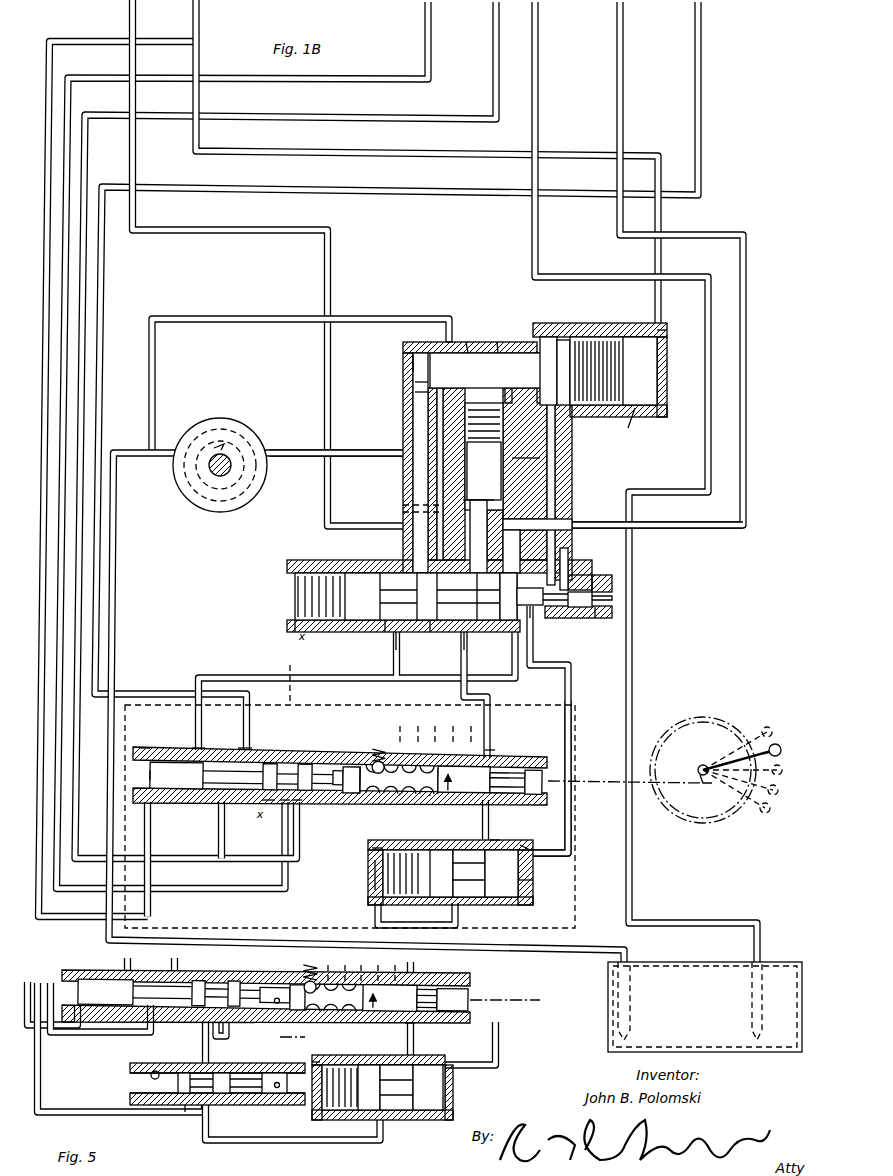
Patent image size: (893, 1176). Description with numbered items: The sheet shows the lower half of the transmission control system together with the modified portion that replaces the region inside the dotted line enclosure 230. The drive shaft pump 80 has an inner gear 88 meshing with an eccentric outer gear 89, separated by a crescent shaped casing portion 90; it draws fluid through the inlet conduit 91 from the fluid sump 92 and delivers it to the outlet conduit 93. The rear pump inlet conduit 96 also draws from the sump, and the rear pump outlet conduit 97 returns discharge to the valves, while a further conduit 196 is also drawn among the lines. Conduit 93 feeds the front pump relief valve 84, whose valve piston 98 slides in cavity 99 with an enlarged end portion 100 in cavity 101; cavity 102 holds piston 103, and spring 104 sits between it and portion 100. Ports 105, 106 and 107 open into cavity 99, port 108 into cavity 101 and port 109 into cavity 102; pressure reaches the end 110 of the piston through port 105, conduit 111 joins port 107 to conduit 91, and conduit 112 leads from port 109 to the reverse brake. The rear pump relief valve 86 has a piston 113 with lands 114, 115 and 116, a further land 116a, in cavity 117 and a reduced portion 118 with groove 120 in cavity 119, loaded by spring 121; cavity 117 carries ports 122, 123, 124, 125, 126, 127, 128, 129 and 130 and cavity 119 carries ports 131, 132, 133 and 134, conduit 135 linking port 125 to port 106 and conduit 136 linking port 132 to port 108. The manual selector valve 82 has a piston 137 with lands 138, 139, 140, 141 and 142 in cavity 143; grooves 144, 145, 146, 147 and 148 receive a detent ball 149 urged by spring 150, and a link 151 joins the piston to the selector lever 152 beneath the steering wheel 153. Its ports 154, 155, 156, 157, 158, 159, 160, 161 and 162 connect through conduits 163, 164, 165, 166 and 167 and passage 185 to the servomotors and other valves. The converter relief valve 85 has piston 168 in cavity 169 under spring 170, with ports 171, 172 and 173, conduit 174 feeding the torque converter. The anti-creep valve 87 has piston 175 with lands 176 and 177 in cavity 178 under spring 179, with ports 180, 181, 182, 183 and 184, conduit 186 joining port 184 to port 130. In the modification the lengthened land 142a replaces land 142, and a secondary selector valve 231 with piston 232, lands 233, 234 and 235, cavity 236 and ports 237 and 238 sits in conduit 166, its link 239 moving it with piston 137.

In FIG. 1B, the pump 80 is at (237, 448).
In FIG. 1B, the inner gear 88 is at (195, 420).
In FIG. 1B, the outer gear 89 is at (258, 436).
In FIG. 1B, the crescent shaped casing portion 90 is at (236, 420).
In FIG. 1B, the inlet conduit 91 is at (115, 537).
In FIG. 1B, the fluid sump 92 is at (710, 1001).
In FIG. 1B, the outlet conduit 93 is at (297, 459).
In FIG. 1B, the inlet conduit 96 is at (539, 19).
In FIG. 1B, the outlet conduit 97 is at (624, 23).
In FIG. 1B, the valve piston 98 is at (468, 335).
In FIG. 1B, the cylindrical cavity 99 is at (500, 338).
In FIG. 1B, the enlarged end portion 100 is at (565, 336).
In FIG. 1B, the cylindrical cavity 101 is at (546, 333).
In FIG. 1B, the cylindrical cavity 102 is at (615, 334).
In FIG. 1B, the piston 103 is at (650, 418).
In FIG. 1B, the spring 104 is at (627, 430).
In FIG. 1B, the port 105 is at (414, 390).
In FIG. 1B, the port 106 is at (414, 400).
In FIG. 1B, the port 107 is at (440, 342).
In FIG. 1B, the port 108 is at (553, 420).
In FIG. 1B, the port 109 is at (664, 325).
In FIG. 1B, the end 110 is at (410, 360).
In FIG. 1B, the conduit 111 is at (287, 325).
In FIG. 1B, the conduit 112 is at (199, 8).
In FIG. 1B, the piston 113 is at (355, 560).
In FIG. 1B, the land 114 is at (355, 622).
In FIG. 1B, the land 115 is at (428, 635).
In FIG. 1B, the land 116 is at (478, 614).
In FIG. 1B, the spool land 116a is at (561, 589).
In FIG. 1B, the cylindrical cavity 117 is at (407, 650).
In FIG. 1B, the portion of reduced diameter 118 is at (598, 618).
In FIG. 1B, the cylindrical cavity 119 is at (582, 592).
In FIG. 1B, the groove 120 is at (578, 612).
In FIG. 1B, the spring 121 is at (290, 578).
In FIG. 1B, the port 122 is at (290, 628).
In FIG. 1B, the port 123 is at (385, 634).
In FIG. 1B, the port 124 is at (412, 562).
In FIG. 1B, the port 125 is at (468, 588).
In FIG. 1B, the port 126 is at (462, 648).
In FIG. 1B, the port 127 is at (490, 596).
In FIG. 1B, the port 128 is at (490, 696).
In FIG. 1B, the port 129 is at (488, 596).
In FIG. 1B, the port 130 is at (534, 650).
In FIG. 1B, the port 131 is at (535, 616).
In FIG. 1B, the port 132 is at (570, 560).
In FIG. 1B, the port 133 is at (575, 578).
In FIG. 1B, the port 134 is at (613, 605).
In FIG. 1B, the conduit 135 is at (412, 482).
In FIG. 1B, the conduit 136 is at (568, 512).
In FIG. 1B, the piston 137 is at (150, 754).
In FIG. 1B, the land 138 is at (175, 782).
In FIG. 1B, the land 139 is at (272, 762).
In FIG. 1B, the land 140 is at (308, 760).
In FIG. 1B, the land 141 is at (338, 790).
In FIG. 1B, the land 142 is at (535, 794).
In FIG. 5, the land 142a is at (460, 982).
In FIG. 1B, the cylindrical cavity 143 is at (172, 800).
In FIG. 1B, the groove 144 is at (375, 795).
In FIG. 1B, the groove 145 is at (393, 795).
In FIG. 1B, the groove 146 is at (412, 795).
In FIG. 1B, the groove 147 is at (420, 794).
In FIG. 1B, the groove 148 is at (450, 794).
In FIG. 1B, the detent ball 149 is at (373, 756).
In FIG. 1B, the spring 150 is at (378, 742).
In FIG. 1B, the link 151 is at (605, 786).
In FIG. 1B, the selector lever 152 is at (778, 744).
In FIG. 1B, the steering wheel 153 is at (726, 755).
In FIG. 1B, the port 154 is at (143, 808).
In FIG. 1B, the port 155 is at (202, 750).
In FIG. 1B, the port 156 is at (219, 812).
In FIG. 1B, the port 157 is at (250, 750).
In FIG. 1B, the port 158 is at (262, 803).
In FIG. 1B, the port 159 is at (288, 806).
In FIG. 1B, the port 160 is at (300, 803).
In FIG. 1B, the port 161 is at (491, 760).
In FIG. 5, the port 161 is at (301, 993).
In FIG. 1B, the port 162 is at (500, 794).
In FIG. 5, the port 162 is at (405, 1026).
In FIG. 1B, the conduit 163 is at (97, 41).
In FIG. 5, the conduit 163 is at (29, 980).
In FIG. 1B, the conduit 164 is at (208, 676).
In FIG. 5, the conduit 164 is at (131, 960).
In FIG. 1B, the conduit 165 is at (493, 19).
In FIG. 5, the conduit 165 is at (52, 980).
In FIG. 1B, the conduit 166 is at (425, 17).
In FIG. 5, the conduit 166 is at (40, 1054).
In FIG. 1B, the conduit 167 is at (492, 713).
In FIG. 5, the conduit 167 is at (413, 973).
In FIG. 1B, the valve piston 168 is at (490, 459).
In FIG. 1B, the cylindrical cavity 169 is at (436, 448).
In FIG. 1B, the spring 170 is at (506, 355).
In FIG. 1B, the port 171 is at (402, 510).
In FIG. 1B, the port 172 is at (500, 489).
In FIG. 1B, the port 173 is at (512, 390).
In FIG. 1B, the conduit 174 is at (136, 8).
In FIG. 1B, the valve piston 175 is at (500, 905).
In FIG. 5, the valve piston 175 is at (428, 1114).
In FIG. 1B, the land 176 is at (440, 848).
In FIG. 1B, the land 177 is at (520, 862).
In FIG. 1B, the cylindrical cavity 178 is at (530, 888).
In FIG. 1B, the spring 179 is at (359, 879).
In FIG. 1B, the port 180 is at (378, 856).
In FIG. 1B, the port 181 is at (412, 898).
In FIG. 5, the port 181 is at (358, 1120).
In FIG. 1B, the port 182 is at (469, 873).
In FIG. 5, the port 182 is at (396, 1087).
In FIG. 1B, the port 183 is at (492, 845).
In FIG. 5, the port 183 is at (381, 1087).
In FIG. 1B, the port 184 is at (526, 845).
In FIG. 1B, the passage 185 is at (483, 828).
In FIG. 5, the passage 185 is at (407, 1041).
In FIG. 1B, the conduit 186 is at (572, 853).
In FIG. 5, the conduit 186 is at (499, 1039).
In FIG. 1B, the conduit 196 is at (701, 25).
In FIG. 5, the conduit 196 is at (178, 962).
In FIG. 1B, the dotted line enclosure 230 is at (290, 668).
In FIG. 5, the secondary selector valve 231 is at (203, 1082).
In FIG. 5, the valve piston 232 is at (320, 1110).
In FIG. 5, the land 233 is at (180, 1094).
In FIG. 5, the land 234 is at (224, 1095).
In FIG. 5, the land 235 is at (270, 1096).
In FIG. 5, the cylindrical cavity 236 is at (156, 1070).
In FIG. 5, the port 237 is at (200, 1110).
In FIG. 5, the port 238 is at (210, 1063).
In FIG. 5, the link 239 is at (306, 1037).
In FIG. 1B, the manual selector valve 82 is at (414, 788).
In FIG. 1B, the front pump relief valve 84 is at (490, 434).
In FIG. 1B, the converter relief valve 85 is at (520, 458).
In FIG. 1B, the rear pump relief valve 86 is at (370, 605).
In FIG. 1B, the anti-creep valve 87 is at (473, 871).
In FIG. 5, the anti-creep valve 87 is at (385, 1088).